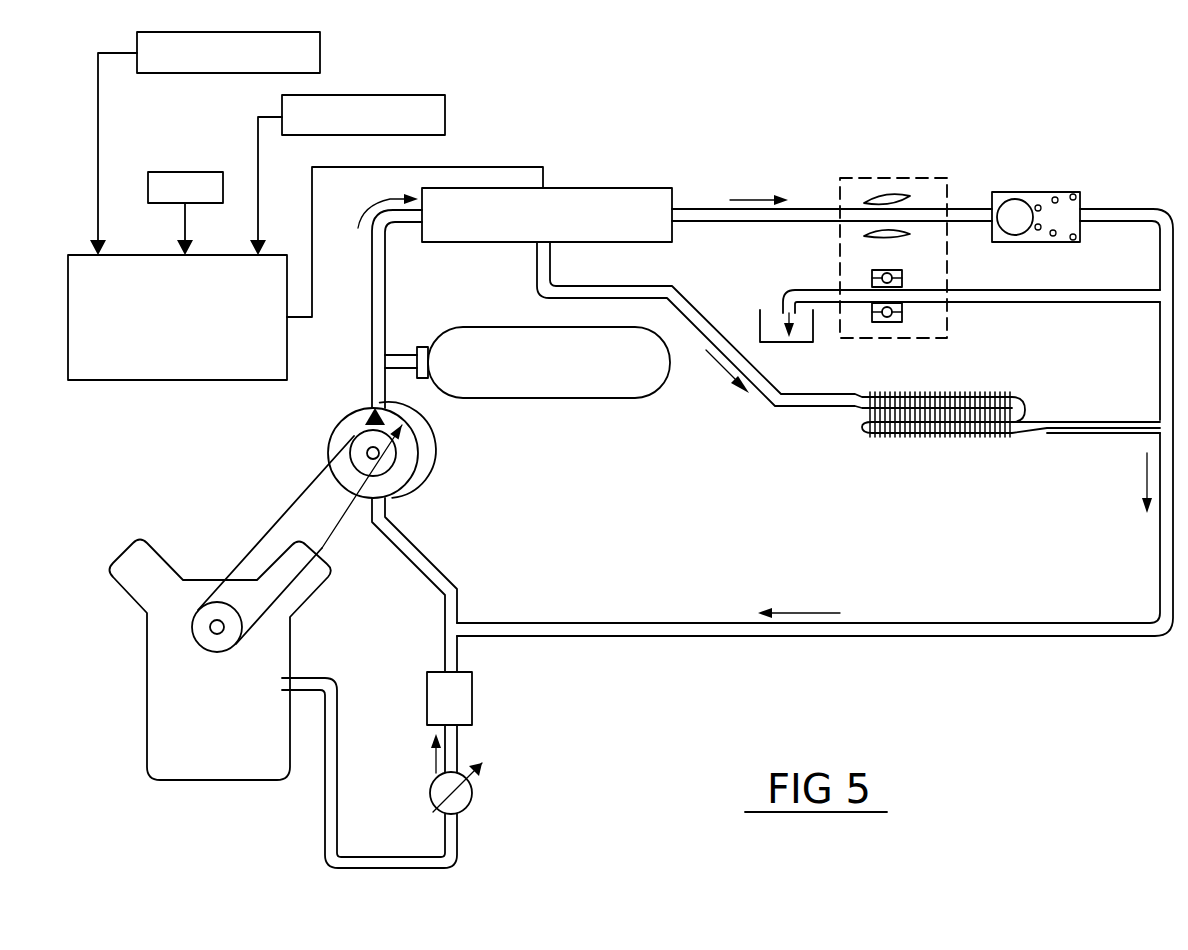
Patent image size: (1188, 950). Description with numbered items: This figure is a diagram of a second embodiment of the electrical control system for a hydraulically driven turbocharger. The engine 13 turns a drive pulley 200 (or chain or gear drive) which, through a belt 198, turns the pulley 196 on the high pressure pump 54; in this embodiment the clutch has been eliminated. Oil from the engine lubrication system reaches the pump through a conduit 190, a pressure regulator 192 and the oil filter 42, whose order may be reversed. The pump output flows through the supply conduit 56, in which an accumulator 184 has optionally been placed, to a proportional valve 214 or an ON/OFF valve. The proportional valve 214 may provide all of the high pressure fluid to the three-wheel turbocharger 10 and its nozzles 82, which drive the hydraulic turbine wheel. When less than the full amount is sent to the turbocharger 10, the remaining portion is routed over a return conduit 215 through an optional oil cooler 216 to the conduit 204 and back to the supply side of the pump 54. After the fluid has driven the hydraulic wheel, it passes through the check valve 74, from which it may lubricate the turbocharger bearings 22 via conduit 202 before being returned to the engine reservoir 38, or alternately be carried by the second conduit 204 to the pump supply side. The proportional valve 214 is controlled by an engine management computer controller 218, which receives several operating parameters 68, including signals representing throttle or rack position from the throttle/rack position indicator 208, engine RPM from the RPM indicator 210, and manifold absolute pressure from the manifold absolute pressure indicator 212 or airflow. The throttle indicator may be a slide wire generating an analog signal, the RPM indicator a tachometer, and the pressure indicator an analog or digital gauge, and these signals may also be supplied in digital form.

The throttle/rack position indicator 208 is at (320, 55).
The manifold absolute pressure indicator 212 is at (445, 117).
The RPM indicator 210 is at (177, 172).
The operating parameters 68 is at (257, 217).
The engine management computer controller 218 is at (97, 382).
The supply conduit 56 is at (375, 312).
The proportional valve 214 is at (623, 188).
The return conduit 215 is at (537, 267).
The accumulator 184 is at (630, 402).
The pulley 196 is at (363, 442).
The high pressure pump 54 is at (427, 452).
The belt 198 is at (268, 533).
The drive pulley 200 is at (222, 652).
The engine 13 is at (163, 707).
The conduit 190 is at (327, 817).
The pressure regulator 192 is at (463, 803).
The oil filter 42 is at (472, 703).
The second conduit 204 is at (1160, 557).
The three-wheel turbocharger 10 is at (887, 178).
The nozzles 82 is at (873, 200).
The turbocharger bearings 22 is at (898, 322).
The conduit 202 is at (1040, 288).
The engine reservoir 38 is at (807, 342).
The check valve 74 is at (1030, 192).
The oil cooler 216 is at (948, 437).